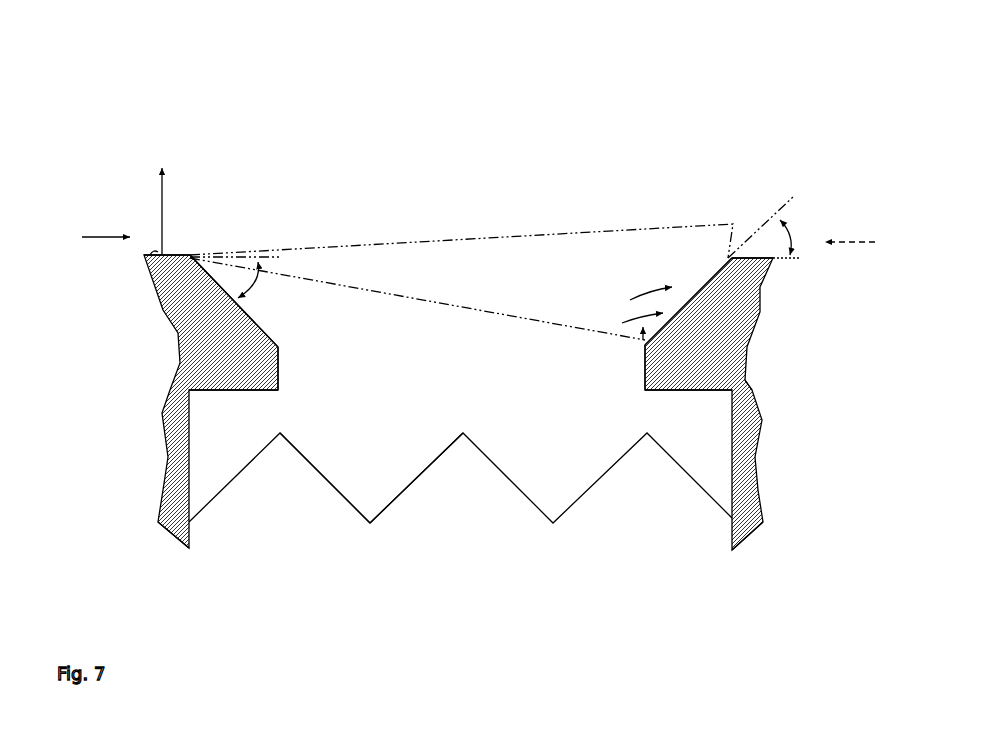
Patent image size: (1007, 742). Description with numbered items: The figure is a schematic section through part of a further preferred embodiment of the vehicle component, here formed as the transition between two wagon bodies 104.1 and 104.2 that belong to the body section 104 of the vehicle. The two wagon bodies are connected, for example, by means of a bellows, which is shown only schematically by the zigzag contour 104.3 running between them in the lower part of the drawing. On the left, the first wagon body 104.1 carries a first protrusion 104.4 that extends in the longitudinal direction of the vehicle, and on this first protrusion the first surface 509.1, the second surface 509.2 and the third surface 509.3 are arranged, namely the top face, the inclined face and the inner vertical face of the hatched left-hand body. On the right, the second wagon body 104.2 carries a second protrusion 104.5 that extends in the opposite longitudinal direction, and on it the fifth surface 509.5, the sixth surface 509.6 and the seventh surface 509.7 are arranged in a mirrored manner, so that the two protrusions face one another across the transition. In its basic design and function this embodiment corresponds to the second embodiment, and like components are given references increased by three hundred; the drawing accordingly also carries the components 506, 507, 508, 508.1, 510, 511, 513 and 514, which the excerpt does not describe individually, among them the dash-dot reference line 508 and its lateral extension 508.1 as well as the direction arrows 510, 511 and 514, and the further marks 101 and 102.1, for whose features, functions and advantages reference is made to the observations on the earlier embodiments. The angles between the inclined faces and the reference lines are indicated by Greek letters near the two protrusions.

The mold arrangement 101 is at (468, 339).
The top surface plane of second mold part 102.1 is at (772, 255).
The body section 104 is at (494, 507).
The wagon body 104.1 is at (178, 542).
The wagon body 104.2 is at (750, 537).
The contour 104.3 is at (412, 487).
The first protrusion 104.4 is at (223, 392).
The second protrusion 104.5 is at (700, 395).
The cavity between mold parts 506 is at (409, 392).
The first mold part 507 is at (173, 325).
The reference axis 508 is at (310, 247).
The recess of second mold part 508.1 is at (748, 382).
The first surface 509.1 is at (171, 255).
The second surface 509.2 is at (215, 280).
The third surface 509.3 is at (282, 368).
The fifth surface 509.5 is at (745, 255).
The sixth surface 509.6 is at (700, 282).
The seventh surface 509.7 is at (645, 378).
The vertical direction arrow 510 is at (158, 200).
The horizontal direction arrow 511 is at (108, 237).
The second mold part 513 is at (760, 308).
The opposite direction arrow 514 is at (862, 242).